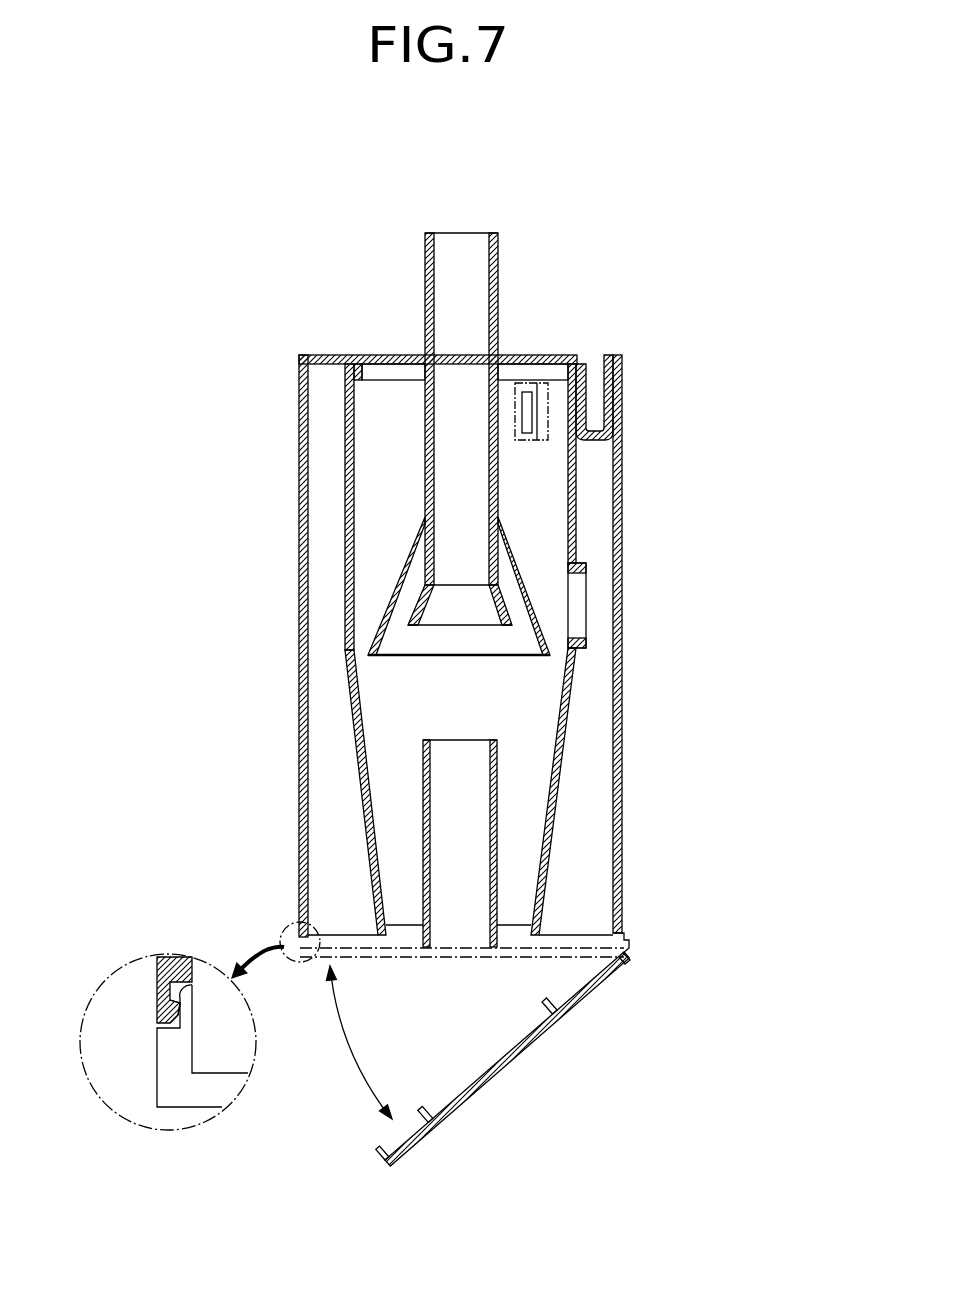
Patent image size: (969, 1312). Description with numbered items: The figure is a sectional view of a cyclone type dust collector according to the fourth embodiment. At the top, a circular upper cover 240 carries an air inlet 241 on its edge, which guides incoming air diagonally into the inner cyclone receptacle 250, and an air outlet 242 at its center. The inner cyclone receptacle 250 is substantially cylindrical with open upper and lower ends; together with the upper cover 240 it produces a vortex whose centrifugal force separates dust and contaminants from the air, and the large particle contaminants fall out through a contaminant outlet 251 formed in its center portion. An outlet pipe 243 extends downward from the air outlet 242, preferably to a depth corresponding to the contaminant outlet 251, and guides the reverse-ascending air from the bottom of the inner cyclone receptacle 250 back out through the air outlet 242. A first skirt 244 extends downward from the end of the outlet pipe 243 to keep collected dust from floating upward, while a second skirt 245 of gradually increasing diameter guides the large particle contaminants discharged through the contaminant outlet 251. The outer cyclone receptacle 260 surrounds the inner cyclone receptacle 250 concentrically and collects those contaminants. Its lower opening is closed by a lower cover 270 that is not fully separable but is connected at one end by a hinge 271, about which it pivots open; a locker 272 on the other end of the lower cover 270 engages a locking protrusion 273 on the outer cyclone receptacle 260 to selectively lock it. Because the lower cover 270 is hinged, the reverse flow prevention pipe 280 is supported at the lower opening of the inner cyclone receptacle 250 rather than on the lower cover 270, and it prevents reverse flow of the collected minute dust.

The upper cover 240 is at (352, 345).
The air inlet 241 is at (590, 397).
The air outlet 242 is at (497, 283).
The outlet pipe 243 is at (425, 441).
The first skirt 244 is at (413, 612).
The second skirt 245 is at (402, 592).
The inner cyclone receptacle 250 is at (590, 510).
The contaminant outlet 251 is at (580, 636).
The outer cyclone receptacle 260 is at (628, 788).
The lower cover 270 is at (520, 1062).
The hinge 271 is at (626, 940).
The locker 272 is at (170, 960).
The locking protrusion 273 is at (157, 1003).
The reverse flow prevention pipe 280 is at (425, 782).